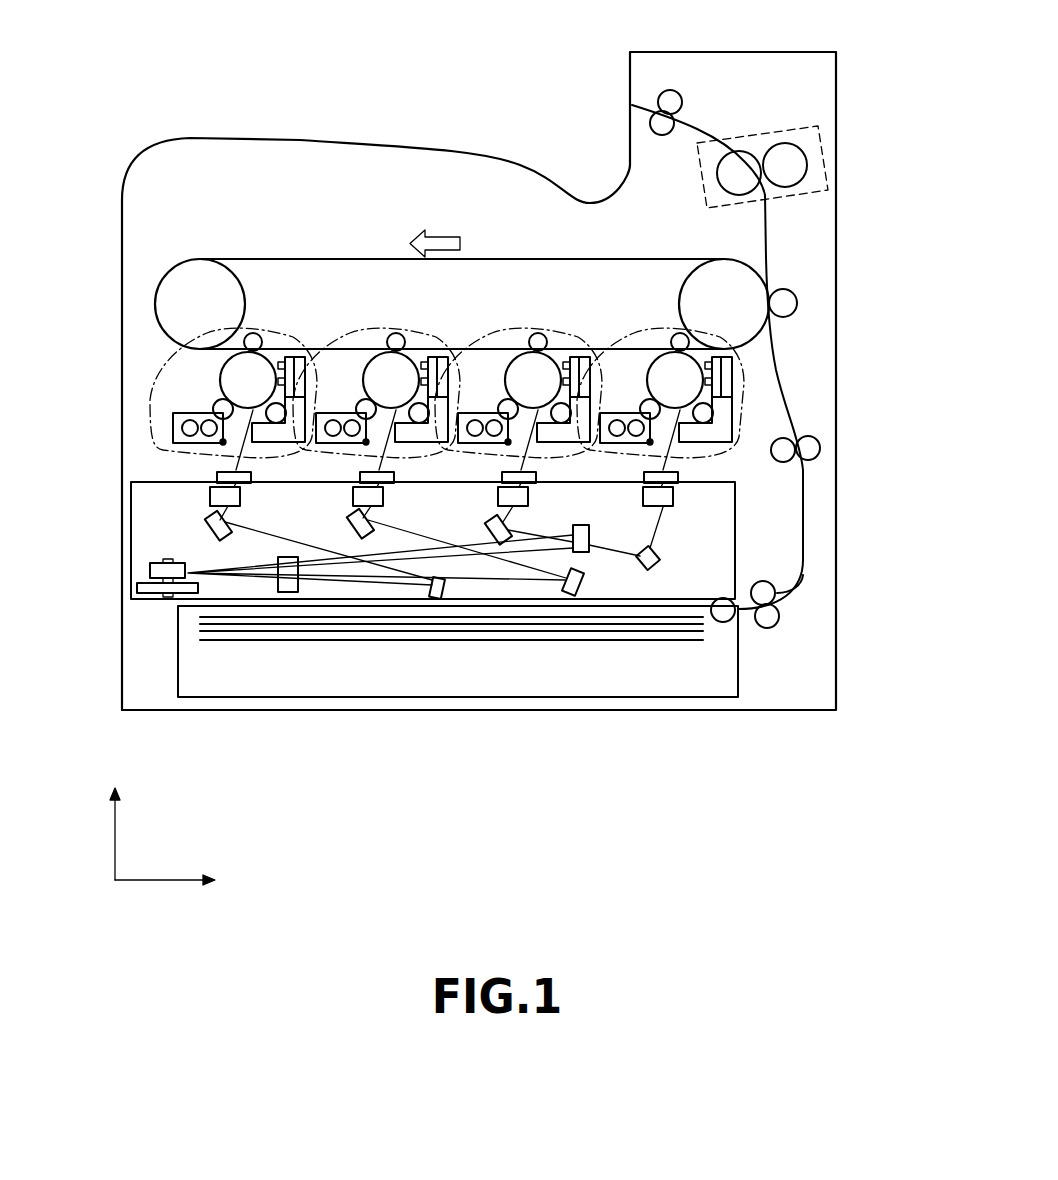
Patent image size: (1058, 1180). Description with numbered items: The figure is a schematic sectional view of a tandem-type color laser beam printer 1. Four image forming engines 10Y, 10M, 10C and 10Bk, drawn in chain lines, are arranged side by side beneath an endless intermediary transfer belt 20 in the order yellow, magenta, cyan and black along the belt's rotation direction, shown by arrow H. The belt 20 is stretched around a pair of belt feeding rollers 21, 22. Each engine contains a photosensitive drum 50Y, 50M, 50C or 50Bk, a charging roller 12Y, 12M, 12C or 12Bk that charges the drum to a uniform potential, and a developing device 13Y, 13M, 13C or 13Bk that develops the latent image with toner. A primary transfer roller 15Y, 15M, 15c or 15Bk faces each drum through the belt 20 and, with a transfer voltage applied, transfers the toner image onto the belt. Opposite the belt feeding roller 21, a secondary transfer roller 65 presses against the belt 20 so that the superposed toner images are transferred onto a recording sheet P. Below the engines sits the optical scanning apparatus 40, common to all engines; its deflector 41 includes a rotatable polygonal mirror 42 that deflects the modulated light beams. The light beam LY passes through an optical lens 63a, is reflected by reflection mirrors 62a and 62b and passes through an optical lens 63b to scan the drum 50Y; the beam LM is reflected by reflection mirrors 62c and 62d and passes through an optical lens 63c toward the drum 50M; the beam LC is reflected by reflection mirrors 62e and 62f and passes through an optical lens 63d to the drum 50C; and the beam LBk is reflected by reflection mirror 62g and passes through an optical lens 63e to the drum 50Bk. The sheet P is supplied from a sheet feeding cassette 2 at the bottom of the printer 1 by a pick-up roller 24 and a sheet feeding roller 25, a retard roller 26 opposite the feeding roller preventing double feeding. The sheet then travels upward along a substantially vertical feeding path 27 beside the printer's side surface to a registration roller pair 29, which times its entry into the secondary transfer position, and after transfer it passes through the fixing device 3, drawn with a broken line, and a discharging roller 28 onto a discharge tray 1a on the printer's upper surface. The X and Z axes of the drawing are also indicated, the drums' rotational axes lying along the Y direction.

The color laser beam printer 1 is at (140, 367).
The discharge tray 1a is at (516, 163).
The sheet feeding cassette 2 is at (523, 696).
The fixing device 3 is at (822, 128).
The image forming engine for yellow 10Y is at (163, 443).
The image forming engine for magenta 10M is at (348, 338).
The image forming engine for cyan 10C is at (558, 322).
The image forming engine for black 10Bk is at (720, 455).
The charging roller 12Y is at (276, 415).
The charging roller 12M is at (420, 415).
The charging roller 12C is at (560, 415).
The charging roller 12Bk is at (705, 414).
The developing device 13Y is at (173, 430).
The developing device 13M is at (330, 412).
The developing device 13C is at (482, 412).
The developing device 13Bk is at (623, 412).
The primary transfer roller 15Y is at (253, 336).
The primary transfer roller 15M is at (390, 376).
The primary transfer roller 15c is at (537, 334).
The primary transfer roller 15Bk is at (679, 334).
The intermediary transfer belt 20 is at (372, 259).
The belt feeding roller 21 is at (725, 305).
The belt feeding roller 22 is at (200, 303).
The pick-up roller 24 is at (728, 622).
The sheet feeding roller 25 is at (775, 593).
The retard roller 26 is at (770, 618).
The feeding path 27 is at (767, 233).
The discharging roller 28 is at (676, 90).
The registration roller pair 29 is at (808, 448).
The optical scanning apparatus 40 is at (735, 545).
The deflector 41 is at (155, 588).
The rotatable polygonal mirror 42 is at (150, 571).
The photosensitive drum 50Y is at (230, 383).
The photosensitive drum 50M is at (394, 335).
The photosensitive drum 50C is at (523, 377).
The photosensitive drum 50Bk is at (675, 383).
The reflection mirror 62a is at (448, 590).
The reflection mirror 62b is at (210, 528).
The reflection mirror 62c is at (590, 583).
The reflection mirror 62d is at (358, 528).
The reflection mirror 62e is at (589, 537).
The reflection mirror 62f is at (488, 527).
The reflection mirror 62g is at (665, 553).
The optical lens 63a is at (280, 558).
The optical lens 63b is at (210, 496).
The lens 63c is at (360, 496).
The optical lens 63d is at (498, 496).
The optical lens 63e is at (643, 496).
The secondary transfer roller 65 is at (797, 300).
The arrow H direction H is at (435, 227).
The recording sheet P is at (590, 648).
The light beam LY is at (285, 537).
The light beam LM is at (418, 538).
The light beam LC is at (560, 540).
The light beam LBk is at (662, 543).
The X axis X is at (177, 881).
The Z axis Z is at (115, 814).